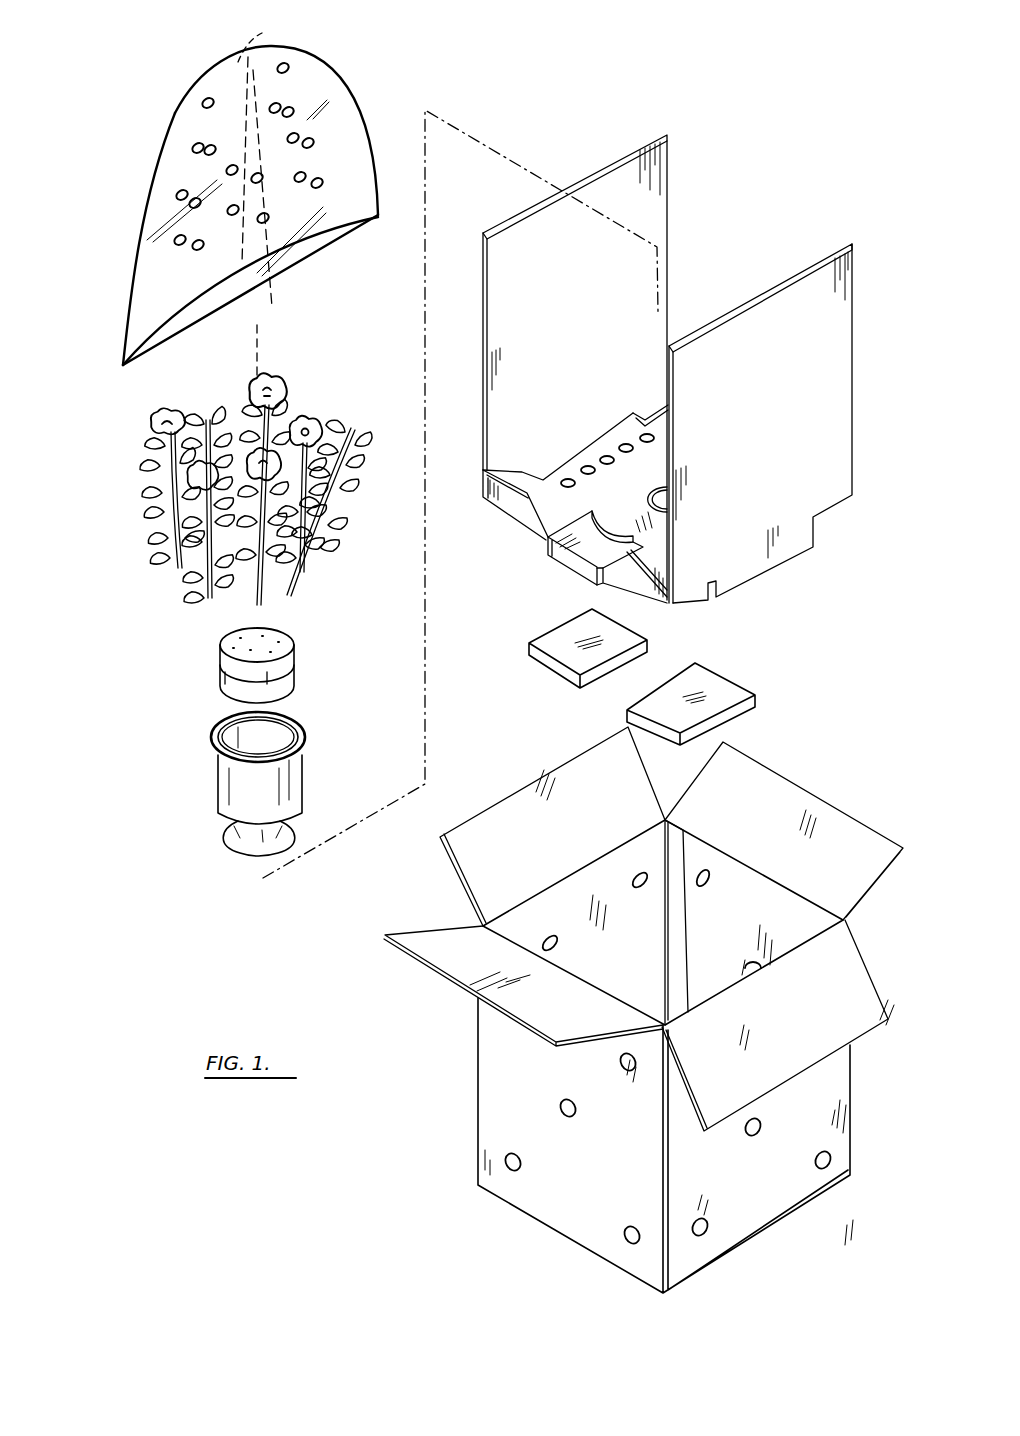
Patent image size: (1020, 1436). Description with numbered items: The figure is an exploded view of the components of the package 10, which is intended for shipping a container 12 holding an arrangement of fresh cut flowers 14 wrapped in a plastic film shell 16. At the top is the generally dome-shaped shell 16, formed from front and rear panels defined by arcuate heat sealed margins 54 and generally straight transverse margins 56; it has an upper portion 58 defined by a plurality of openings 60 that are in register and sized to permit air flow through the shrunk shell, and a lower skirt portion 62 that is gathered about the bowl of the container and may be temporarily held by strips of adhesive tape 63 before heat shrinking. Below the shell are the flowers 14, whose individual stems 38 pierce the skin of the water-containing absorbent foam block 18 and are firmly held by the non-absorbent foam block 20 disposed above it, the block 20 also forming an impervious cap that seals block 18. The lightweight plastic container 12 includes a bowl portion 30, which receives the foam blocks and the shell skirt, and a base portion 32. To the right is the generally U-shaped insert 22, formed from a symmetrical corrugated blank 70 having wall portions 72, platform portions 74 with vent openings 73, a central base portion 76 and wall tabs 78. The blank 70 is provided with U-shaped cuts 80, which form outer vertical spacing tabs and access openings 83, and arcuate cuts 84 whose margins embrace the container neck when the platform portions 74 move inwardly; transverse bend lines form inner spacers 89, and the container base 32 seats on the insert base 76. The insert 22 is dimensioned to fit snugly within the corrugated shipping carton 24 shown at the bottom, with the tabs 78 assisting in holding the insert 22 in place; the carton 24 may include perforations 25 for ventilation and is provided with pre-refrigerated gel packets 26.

The package 10 is at (326, 924).
The container 12 is at (210, 797).
The fresh cut flowers 14 is at (146, 542).
The plastic film shell 16 is at (149, 167).
The absorbent foam block 18 is at (224, 692).
The non-absorbent foam block 20 is at (221, 645).
The U-shaped insert 22 is at (681, 221).
The shipping carton 24 is at (477, 1080).
The perforations 25 is at (566, 1116).
The pre-refrigerated gel packets 26 is at (640, 698).
The bowl portion 30 is at (292, 784).
The base portion 32 is at (241, 847).
The stems 38 is at (264, 602).
The arcuate heat sealed margins 54 is at (146, 211).
The transverse margins 56 is at (330, 227).
The upper portion 58 is at (313, 73).
The openings 60 is at (318, 181).
The lower skirt portion 62 is at (292, 284).
The strips of adhesive tape 63 is at (262, 64).
The symmetrical blank 70 is at (727, 318).
The wall portions 72 is at (515, 231).
The vent openings 73 is at (622, 448).
The platform portions 74 is at (658, 461).
The central base portion 76 is at (567, 572).
The wall tabs 78 is at (512, 507).
The U-shaped cuts 80 is at (562, 470).
The access openings 83 is at (618, 425).
The arcuate cuts 84 is at (668, 497).
The inner spacers 89 is at (545, 547).